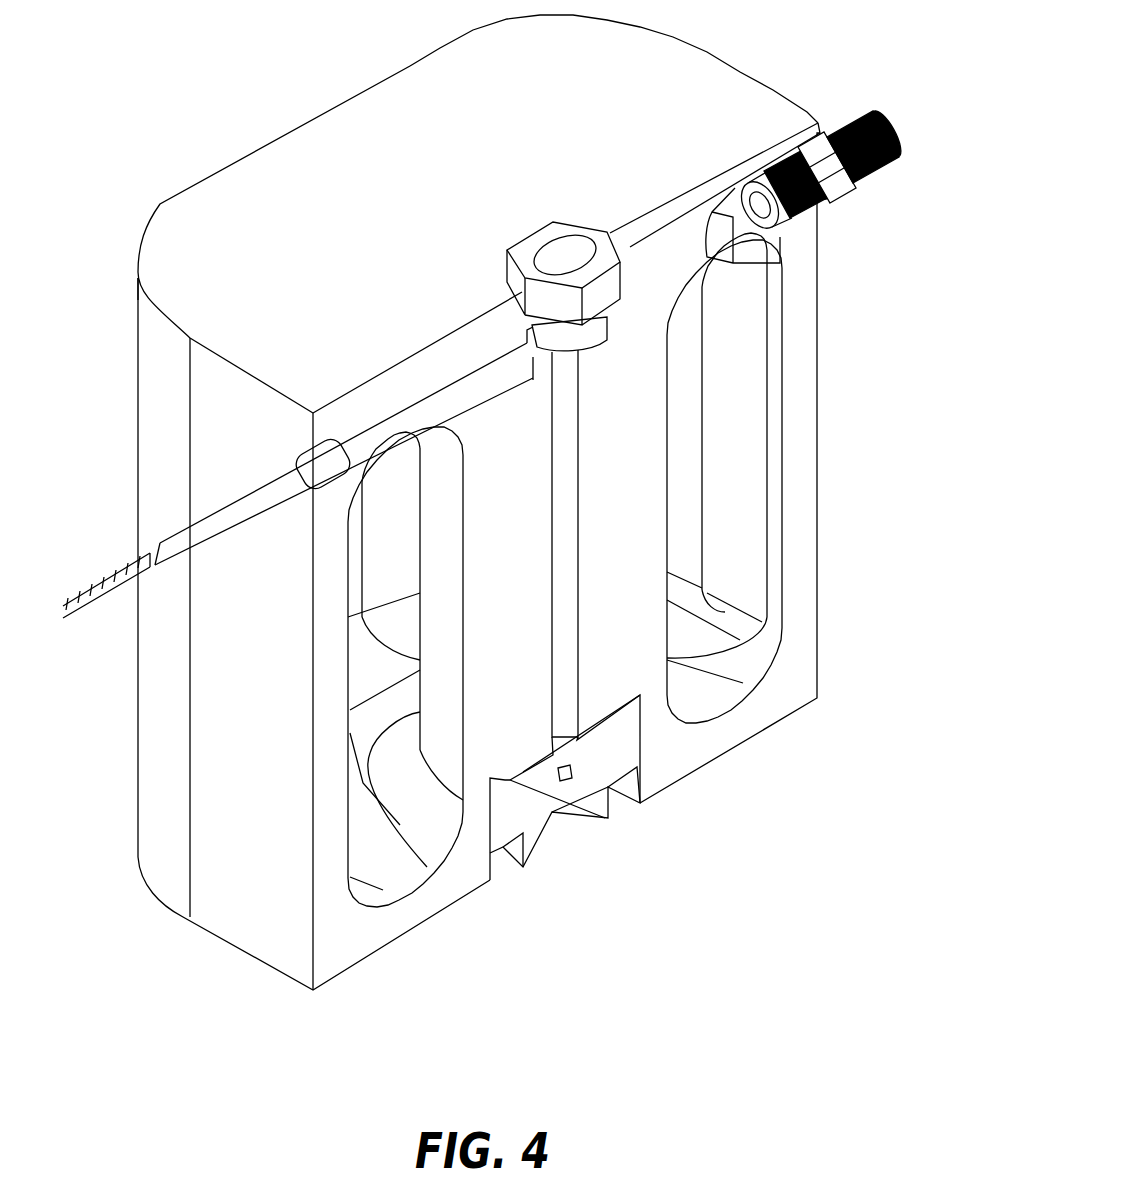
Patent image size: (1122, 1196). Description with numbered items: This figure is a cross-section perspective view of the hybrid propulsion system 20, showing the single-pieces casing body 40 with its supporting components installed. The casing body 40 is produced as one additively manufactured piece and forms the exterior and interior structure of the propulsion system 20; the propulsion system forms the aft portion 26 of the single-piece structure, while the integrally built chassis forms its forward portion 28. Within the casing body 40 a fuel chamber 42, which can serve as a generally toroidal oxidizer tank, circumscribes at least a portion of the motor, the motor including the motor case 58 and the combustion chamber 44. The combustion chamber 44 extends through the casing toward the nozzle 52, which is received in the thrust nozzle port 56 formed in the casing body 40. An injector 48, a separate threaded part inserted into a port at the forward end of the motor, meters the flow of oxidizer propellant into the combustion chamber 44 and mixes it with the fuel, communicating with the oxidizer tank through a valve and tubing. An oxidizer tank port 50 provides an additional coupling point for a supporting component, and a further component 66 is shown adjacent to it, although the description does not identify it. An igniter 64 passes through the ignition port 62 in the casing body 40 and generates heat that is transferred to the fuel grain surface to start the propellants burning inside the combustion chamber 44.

The hybrid propulsion system 20 is at (208, 97).
The aft portion 26 is at (838, 695).
The forward portion 28 is at (728, 45).
The single-pieces casing body 40 is at (157, 272).
The fuel chamber 42 is at (372, 658).
The combustion chamber 44 is at (568, 505).
The injector 48 is at (600, 245).
The oxidizer tank port 50 is at (822, 125).
The threaded portion 66 is at (860, 110).
The nozzle 52 is at (610, 820).
The thrust nozzle port 56 is at (502, 890).
The motor case 58 is at (567, 558).
The ignition port 62 is at (293, 445).
The igniter 64 is at (157, 550).